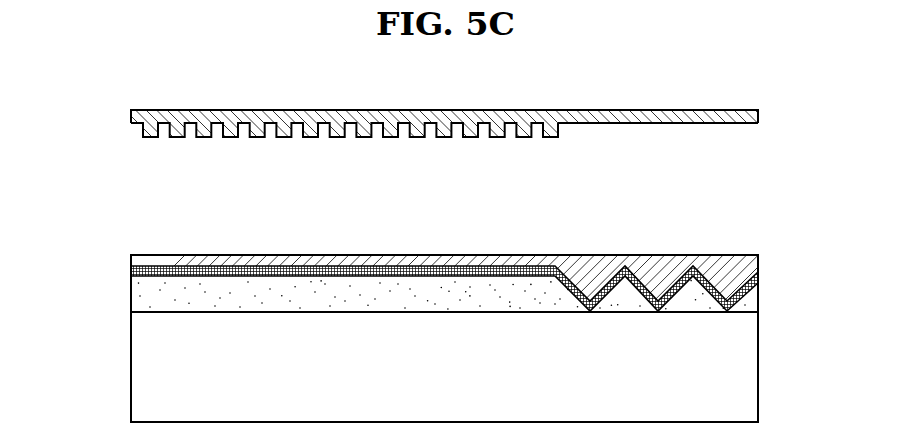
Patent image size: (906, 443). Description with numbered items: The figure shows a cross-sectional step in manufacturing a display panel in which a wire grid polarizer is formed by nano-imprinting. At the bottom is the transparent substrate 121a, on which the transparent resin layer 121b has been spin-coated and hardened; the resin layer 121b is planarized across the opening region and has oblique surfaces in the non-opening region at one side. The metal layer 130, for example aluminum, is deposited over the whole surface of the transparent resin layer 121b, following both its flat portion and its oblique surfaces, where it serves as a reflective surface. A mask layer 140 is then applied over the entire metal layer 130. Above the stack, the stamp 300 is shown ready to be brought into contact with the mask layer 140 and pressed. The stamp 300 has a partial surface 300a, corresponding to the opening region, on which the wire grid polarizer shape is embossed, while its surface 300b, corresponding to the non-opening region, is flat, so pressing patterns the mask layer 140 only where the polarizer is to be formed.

The stamp 300 is at (436, 135).
The partial surface 300a is at (178, 137).
The surface 300b is at (700, 123).
The mask layer 140 is at (760, 262).
The metal layer 130 is at (758, 273).
The transparent resin layer 121b is at (747, 302).
The transparent substrate 121a is at (748, 371).